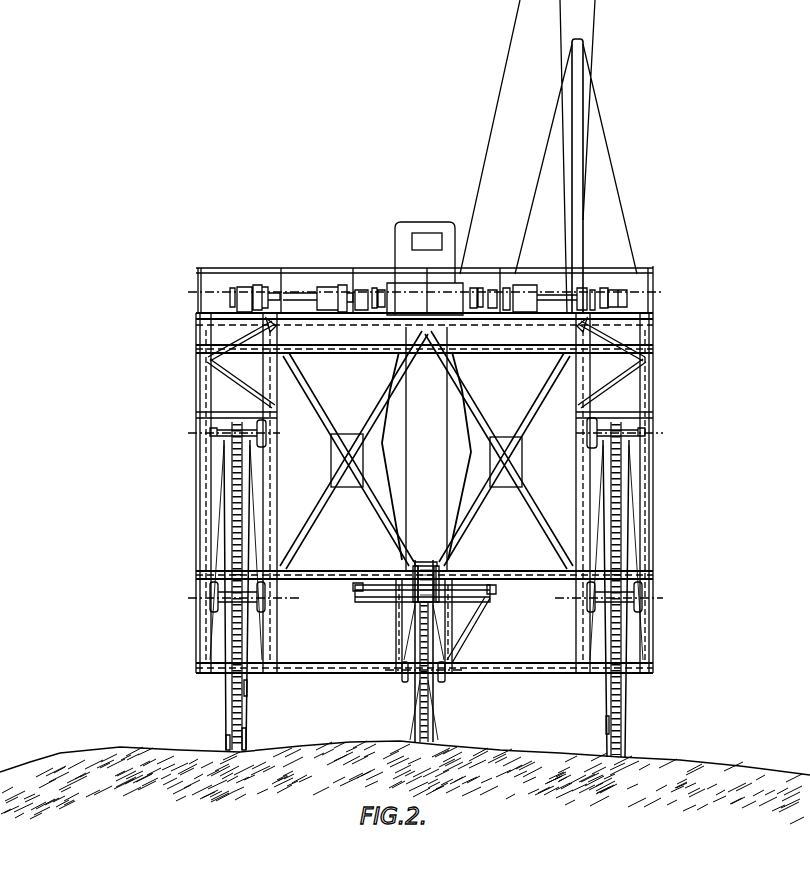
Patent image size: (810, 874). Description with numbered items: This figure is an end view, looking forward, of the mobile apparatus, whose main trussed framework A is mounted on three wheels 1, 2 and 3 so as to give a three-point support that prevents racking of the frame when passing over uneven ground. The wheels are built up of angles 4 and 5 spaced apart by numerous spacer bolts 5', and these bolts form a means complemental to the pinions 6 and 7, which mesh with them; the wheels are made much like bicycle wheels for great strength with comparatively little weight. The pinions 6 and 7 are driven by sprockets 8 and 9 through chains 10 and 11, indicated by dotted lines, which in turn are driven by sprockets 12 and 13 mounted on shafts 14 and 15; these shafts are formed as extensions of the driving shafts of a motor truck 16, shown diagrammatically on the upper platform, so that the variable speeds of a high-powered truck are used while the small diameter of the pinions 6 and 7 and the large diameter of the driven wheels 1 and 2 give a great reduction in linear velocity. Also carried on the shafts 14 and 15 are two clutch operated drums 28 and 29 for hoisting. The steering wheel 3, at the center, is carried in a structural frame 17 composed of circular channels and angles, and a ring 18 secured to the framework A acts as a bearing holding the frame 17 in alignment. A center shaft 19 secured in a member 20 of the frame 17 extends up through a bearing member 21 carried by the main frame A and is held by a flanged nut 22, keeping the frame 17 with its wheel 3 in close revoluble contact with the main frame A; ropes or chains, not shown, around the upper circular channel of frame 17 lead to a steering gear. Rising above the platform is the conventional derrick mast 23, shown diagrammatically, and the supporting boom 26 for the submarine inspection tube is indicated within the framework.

The wheel 1 is at (247, 712).
The wheel 2 is at (623, 722).
The steering wheel 3 is at (434, 720).
The angle 4 is at (230, 735).
The angle 5 is at (252, 739).
The spacer bolts 5' is at (424, 710).
The pinion 6 is at (235, 428).
The pinion 7 is at (615, 430).
The sprocket 8 is at (266, 437).
The sprocket 9 is at (587, 429).
The chain 10 is at (266, 364).
The chain 11 is at (588, 368).
The sprocket 12 is at (257, 297).
The sprocket 13 is at (602, 300).
The shaft 14 is at (300, 286).
The shaft 15 is at (557, 288).
The motor truck 16 is at (425, 268).
The structural frame 17 is at (482, 604).
The ring 18 is at (496, 588).
The center shaft 19 is at (430, 556).
The member 20 is at (435, 590).
The bearing member 21 is at (443, 573).
The flanged nut 22 is at (415, 572).
The derrick mast 23 is at (583, 218).
The supporting boom 26 is at (426, 456).
The clutch operated drum 28 is at (337, 287).
The clutch operated drum 29 is at (517, 287).
The trussed framework A is at (322, 570).